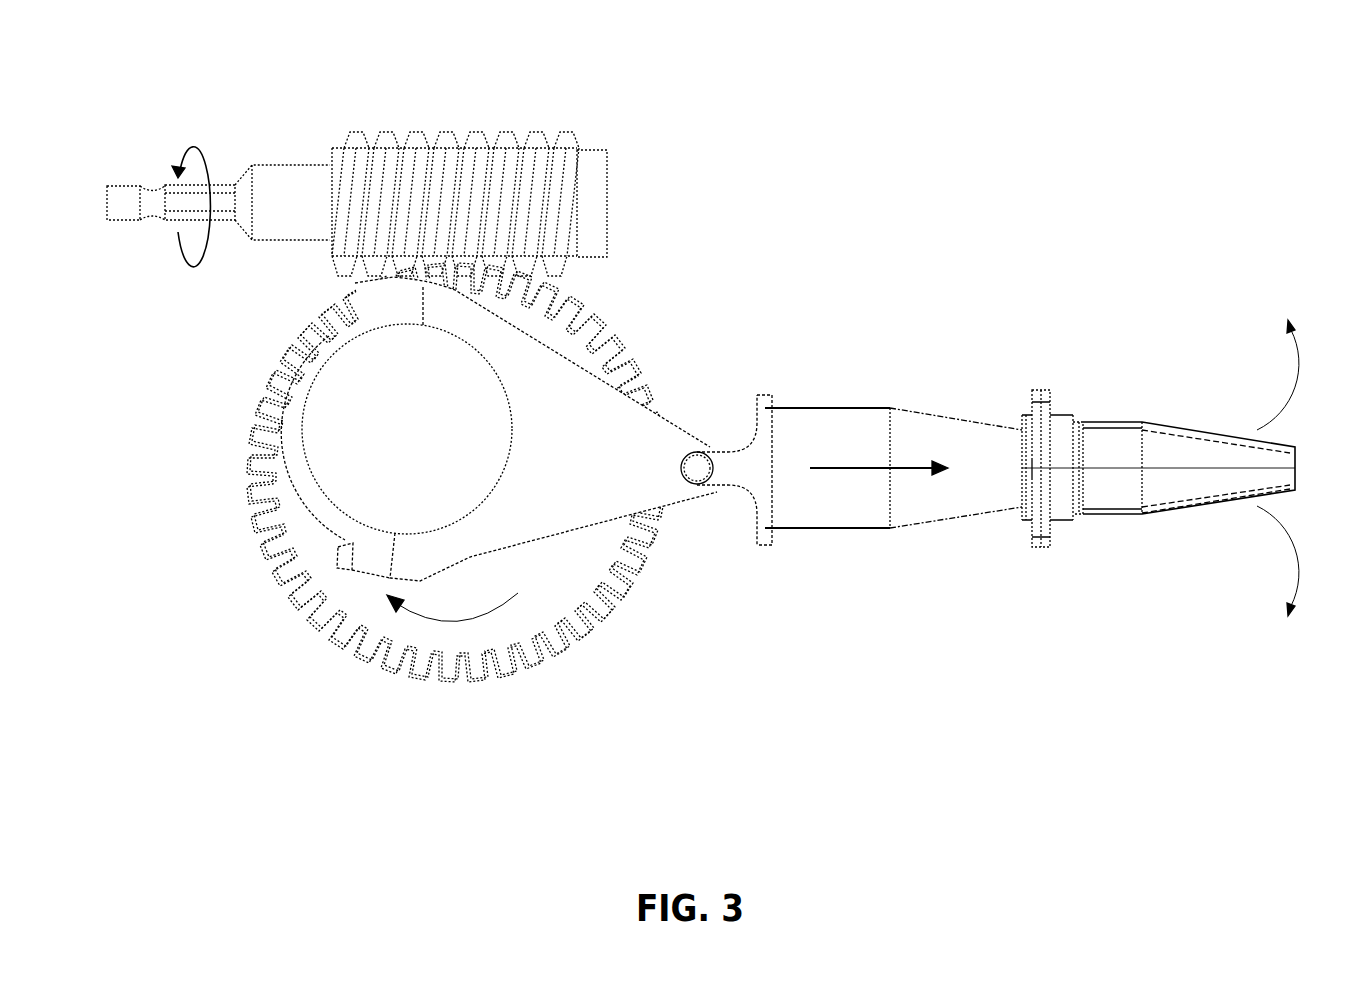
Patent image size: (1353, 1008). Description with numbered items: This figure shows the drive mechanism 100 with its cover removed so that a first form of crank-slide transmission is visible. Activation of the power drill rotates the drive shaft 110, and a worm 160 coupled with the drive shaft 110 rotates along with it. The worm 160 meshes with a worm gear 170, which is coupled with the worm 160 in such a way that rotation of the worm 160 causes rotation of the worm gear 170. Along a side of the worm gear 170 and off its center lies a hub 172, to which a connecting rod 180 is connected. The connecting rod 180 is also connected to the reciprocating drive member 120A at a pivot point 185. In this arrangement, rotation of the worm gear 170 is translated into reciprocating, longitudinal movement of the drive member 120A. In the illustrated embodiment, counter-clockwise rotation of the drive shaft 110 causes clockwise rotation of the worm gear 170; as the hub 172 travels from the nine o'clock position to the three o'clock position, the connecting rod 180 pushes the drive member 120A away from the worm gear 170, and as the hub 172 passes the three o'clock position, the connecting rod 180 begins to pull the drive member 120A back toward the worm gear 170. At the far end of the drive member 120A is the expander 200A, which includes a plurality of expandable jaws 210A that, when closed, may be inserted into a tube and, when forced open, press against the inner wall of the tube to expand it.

The drive mechanism 100 is at (876, 124).
The drive shaft 110 is at (118, 185).
The worm 160 is at (420, 153).
The worm gear 170 is at (292, 591).
The hub 172 is at (378, 434).
The connecting rod 180 is at (482, 520).
The pivot point 185 is at (703, 457).
The drive member 120A is at (965, 512).
The expander 200A is at (1155, 365).
The jaws 210A is at (1190, 485).